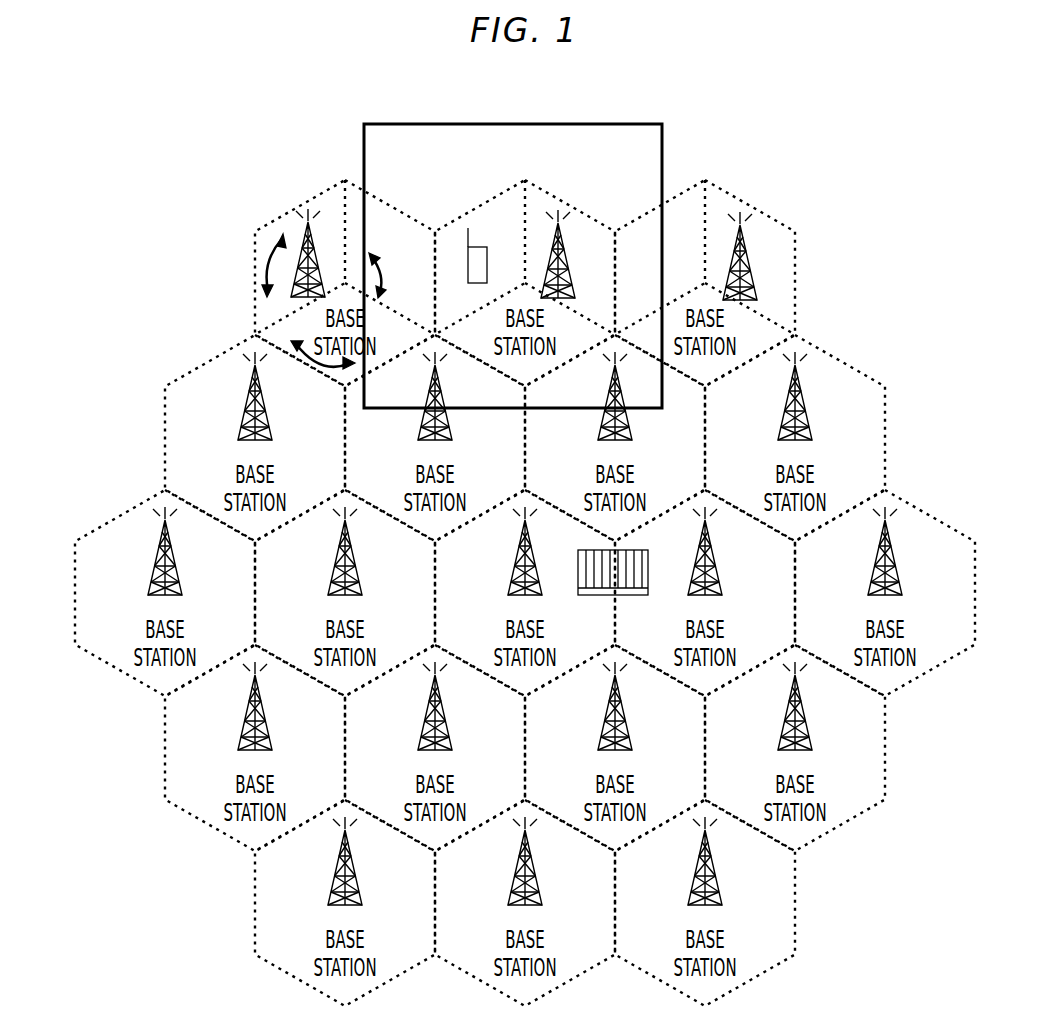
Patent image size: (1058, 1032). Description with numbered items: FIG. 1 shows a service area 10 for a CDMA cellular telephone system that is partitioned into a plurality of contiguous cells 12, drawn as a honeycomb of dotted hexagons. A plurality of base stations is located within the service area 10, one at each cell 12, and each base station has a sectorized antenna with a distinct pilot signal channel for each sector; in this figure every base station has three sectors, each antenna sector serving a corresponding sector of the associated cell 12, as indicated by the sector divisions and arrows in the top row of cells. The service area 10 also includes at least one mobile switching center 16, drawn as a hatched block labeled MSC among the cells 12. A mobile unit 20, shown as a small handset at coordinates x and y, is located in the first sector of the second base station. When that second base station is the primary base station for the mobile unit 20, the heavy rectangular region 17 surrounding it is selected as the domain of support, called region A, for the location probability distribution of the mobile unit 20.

The service area 10 is at (362, 72).
The cell 12 is at (820, 586).
The mobile switching center 16 is at (609, 597).
The region 17 is at (513, 240).
The mobile unit 20 is at (466, 289).